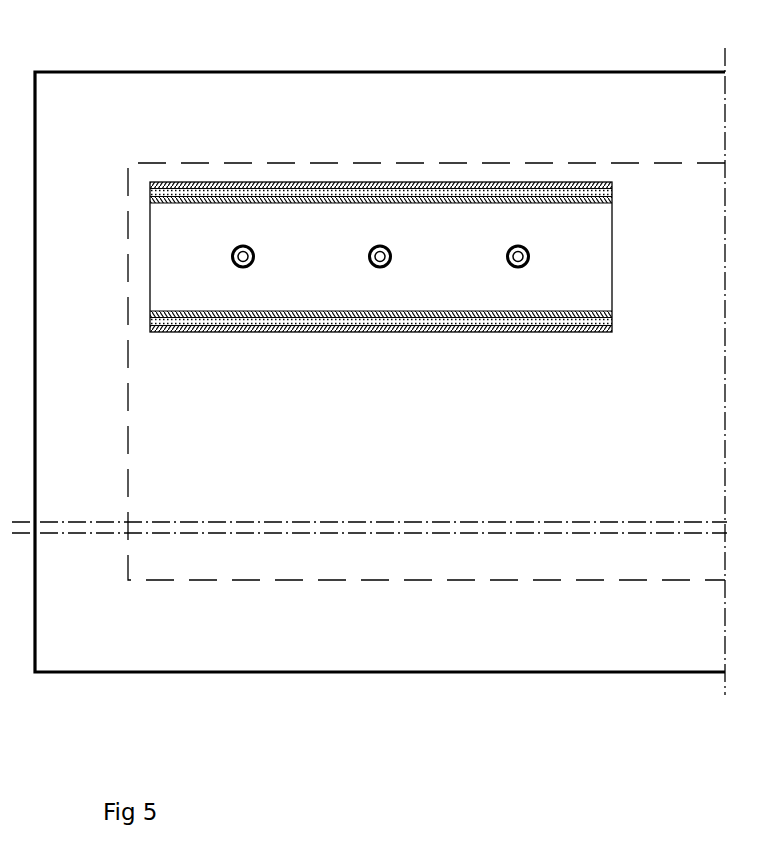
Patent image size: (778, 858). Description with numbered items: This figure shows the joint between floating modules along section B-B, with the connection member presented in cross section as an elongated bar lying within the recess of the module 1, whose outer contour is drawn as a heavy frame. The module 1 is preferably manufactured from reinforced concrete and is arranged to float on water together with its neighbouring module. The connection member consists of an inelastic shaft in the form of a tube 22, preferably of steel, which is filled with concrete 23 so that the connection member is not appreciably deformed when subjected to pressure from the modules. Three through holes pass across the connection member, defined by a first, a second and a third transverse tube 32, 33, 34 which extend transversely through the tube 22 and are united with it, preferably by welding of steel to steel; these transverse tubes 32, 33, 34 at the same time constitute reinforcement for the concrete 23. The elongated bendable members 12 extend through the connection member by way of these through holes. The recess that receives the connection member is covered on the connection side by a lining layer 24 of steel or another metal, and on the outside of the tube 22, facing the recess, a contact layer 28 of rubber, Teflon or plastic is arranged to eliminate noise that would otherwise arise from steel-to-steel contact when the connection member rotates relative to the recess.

The module 1 is at (159, 118).
The elongated bendable members 12 is at (515, 246).
The tube 22 is at (583, 200).
The concrete 23 is at (168, 261).
The lining layer 24 is at (603, 178).
The contact layer 28 is at (592, 193).
The first transverse tube 32 is at (243, 268).
The second transverse tube 33 is at (380, 268).
The third transverse tube 34 is at (518, 268).